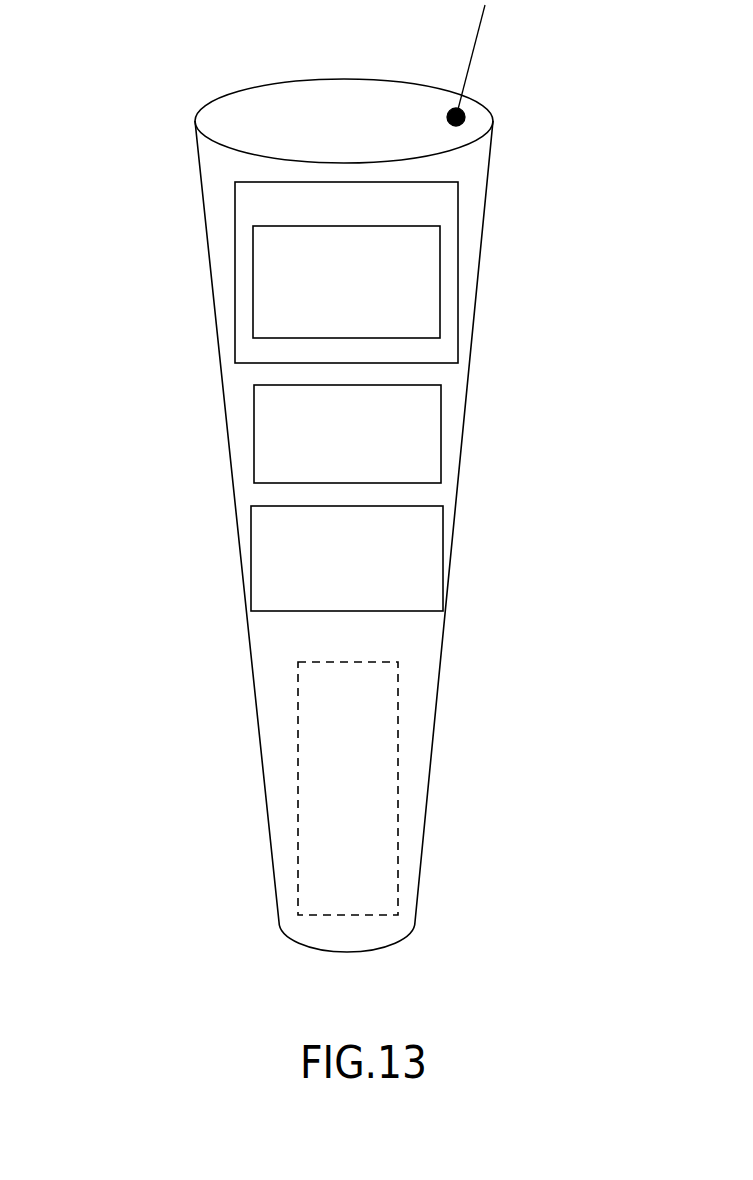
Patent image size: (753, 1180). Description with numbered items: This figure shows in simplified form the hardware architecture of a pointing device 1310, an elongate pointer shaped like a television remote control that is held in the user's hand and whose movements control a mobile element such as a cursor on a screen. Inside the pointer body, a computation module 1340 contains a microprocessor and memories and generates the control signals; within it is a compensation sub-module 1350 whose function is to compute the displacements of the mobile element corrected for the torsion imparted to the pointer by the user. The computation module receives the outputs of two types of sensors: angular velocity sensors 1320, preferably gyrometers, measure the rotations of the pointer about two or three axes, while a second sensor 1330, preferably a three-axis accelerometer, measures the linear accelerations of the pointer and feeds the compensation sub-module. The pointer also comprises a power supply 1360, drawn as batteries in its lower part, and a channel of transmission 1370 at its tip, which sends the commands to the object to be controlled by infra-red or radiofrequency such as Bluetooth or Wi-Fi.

The pointing device 1310 is at (472, 206).
The angular velocity sensors 1320 is at (442, 433).
The linear accelerations sensor 1330 is at (443, 535).
The computation module 1340 is at (235, 216).
The compensation sub-module 1350 is at (253, 321).
The power supply 1360 is at (398, 727).
The channel of transmission 1370 is at (463, 115).